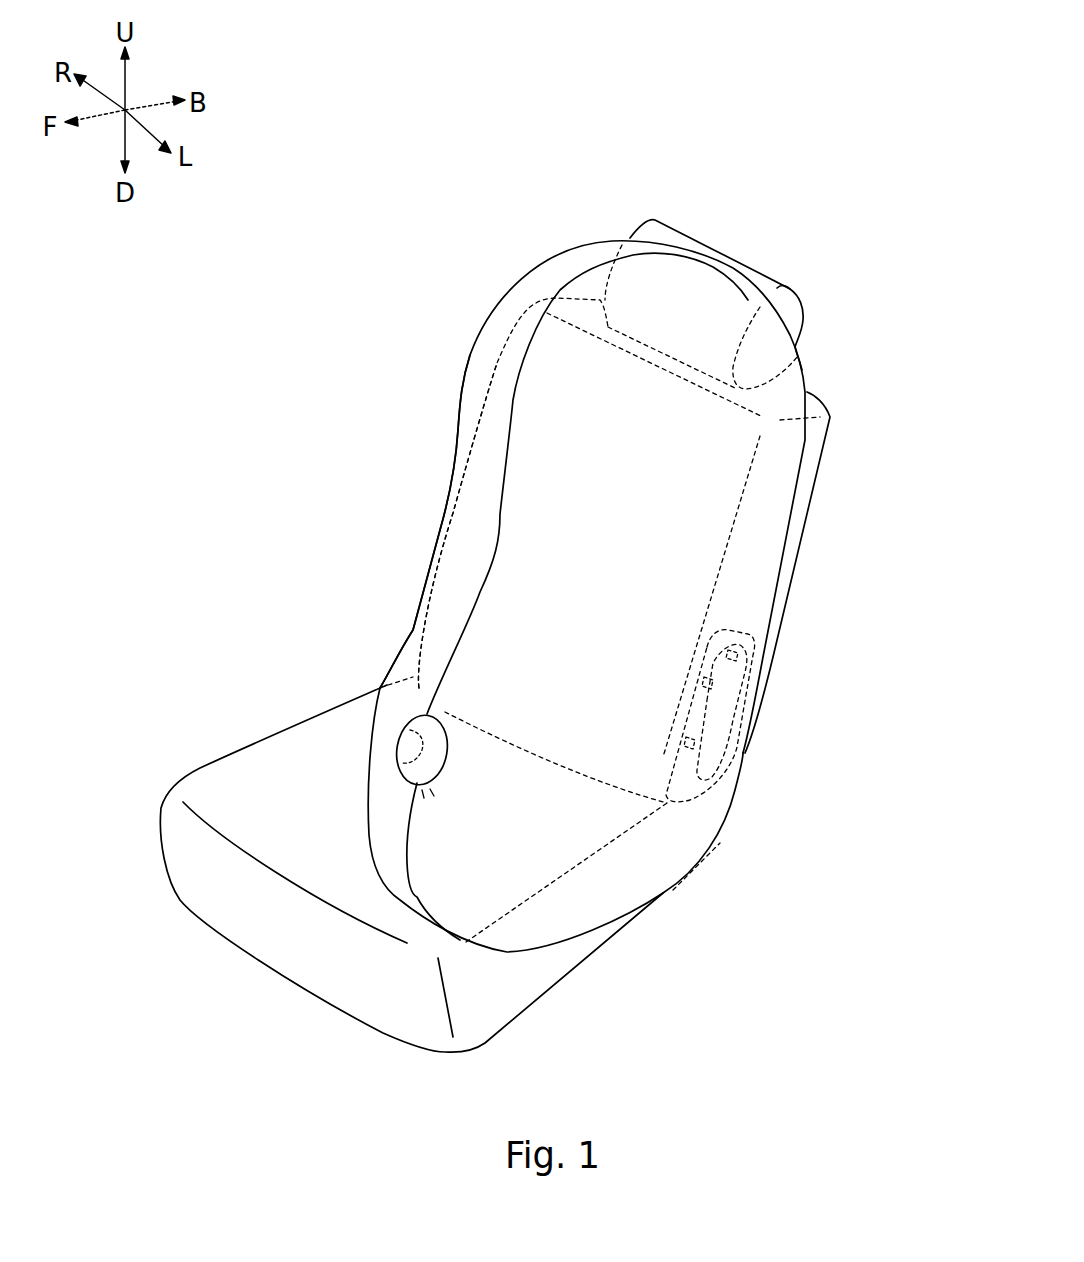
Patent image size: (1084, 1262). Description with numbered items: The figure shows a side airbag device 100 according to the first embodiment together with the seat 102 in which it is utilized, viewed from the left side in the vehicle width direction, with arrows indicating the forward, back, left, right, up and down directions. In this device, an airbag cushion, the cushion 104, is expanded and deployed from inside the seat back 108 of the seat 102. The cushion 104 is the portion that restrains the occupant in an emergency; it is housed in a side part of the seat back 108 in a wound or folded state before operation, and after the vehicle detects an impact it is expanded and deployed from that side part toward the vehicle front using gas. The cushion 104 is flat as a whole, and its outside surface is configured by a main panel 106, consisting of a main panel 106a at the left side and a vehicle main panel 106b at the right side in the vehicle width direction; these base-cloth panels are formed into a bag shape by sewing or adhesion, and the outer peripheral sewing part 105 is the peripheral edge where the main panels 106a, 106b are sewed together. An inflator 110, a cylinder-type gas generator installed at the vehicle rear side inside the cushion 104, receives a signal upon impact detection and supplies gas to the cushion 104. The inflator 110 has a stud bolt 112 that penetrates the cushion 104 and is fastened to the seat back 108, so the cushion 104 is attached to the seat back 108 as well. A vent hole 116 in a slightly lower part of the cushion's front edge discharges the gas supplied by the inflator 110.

The side airbag device 100 is at (853, 132).
The seat 102 is at (697, 240).
The cushion 104 is at (543, 263).
The outer peripheral sewing part 105 is at (513, 360).
The main panel 106 is at (325, 412).
The main panel 106a is at (530, 525).
The vehicle main panel 106b is at (460, 400).
The seat back 108 is at (830, 416).
The inflator 110 is at (743, 727).
The stud bolt 112 is at (777, 630).
The vent hole 116 is at (414, 718).